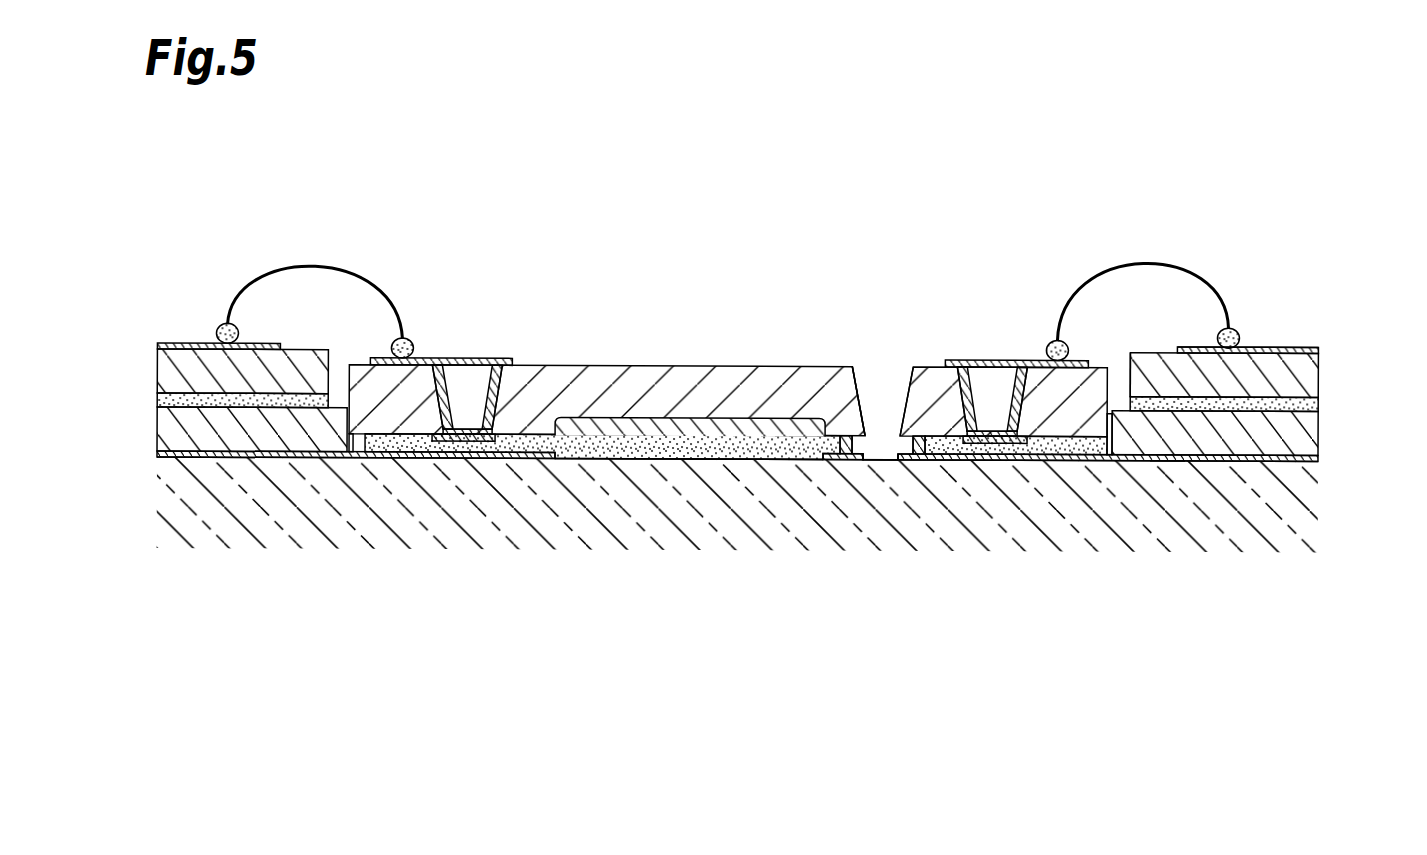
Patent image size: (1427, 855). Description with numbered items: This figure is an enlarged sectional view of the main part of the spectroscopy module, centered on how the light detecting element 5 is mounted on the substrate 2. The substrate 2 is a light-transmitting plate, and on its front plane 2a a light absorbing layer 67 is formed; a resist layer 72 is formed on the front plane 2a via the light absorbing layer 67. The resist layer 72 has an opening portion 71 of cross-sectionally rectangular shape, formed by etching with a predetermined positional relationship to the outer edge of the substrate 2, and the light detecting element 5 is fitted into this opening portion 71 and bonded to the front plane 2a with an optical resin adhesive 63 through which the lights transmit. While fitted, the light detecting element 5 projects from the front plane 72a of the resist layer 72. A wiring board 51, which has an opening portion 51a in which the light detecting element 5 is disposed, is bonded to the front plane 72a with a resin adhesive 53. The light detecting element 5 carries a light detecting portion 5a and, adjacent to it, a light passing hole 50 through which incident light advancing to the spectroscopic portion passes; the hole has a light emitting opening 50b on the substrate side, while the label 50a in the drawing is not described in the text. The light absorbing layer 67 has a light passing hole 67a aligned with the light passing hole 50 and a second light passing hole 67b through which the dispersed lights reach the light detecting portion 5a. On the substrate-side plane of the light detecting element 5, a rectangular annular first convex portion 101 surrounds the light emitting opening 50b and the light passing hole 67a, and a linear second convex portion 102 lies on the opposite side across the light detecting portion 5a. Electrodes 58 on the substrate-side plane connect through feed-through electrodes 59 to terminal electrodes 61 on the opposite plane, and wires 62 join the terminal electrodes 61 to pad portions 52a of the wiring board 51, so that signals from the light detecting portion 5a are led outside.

The substrate 2 is at (1311, 515).
The front plane 2a is at (1170, 456).
The light detecting element 5 is at (577, 364).
The light detecting portion 5a is at (697, 416).
The light passing hole 50 is at (900, 400).
The groove opening 50a is at (862, 364).
The light emitting opening 50b is at (873, 452).
The wiring board 51 is at (1307, 368).
The opening portion 51a is at (1127, 368).
The pad portions 52a is at (1298, 343).
The resin adhesive 53 is at (1310, 396).
The electrodes 58 is at (466, 441).
The feed-through electrodes 59 is at (450, 404).
The terminal electrodes 61 is at (418, 357).
The wires 62 is at (1163, 260).
The optical resin adhesive 63 is at (714, 458).
The light absorbing layer 67 is at (1312, 456).
The light passing hole 67a is at (889, 458).
The light passing hole 67b is at (557, 458).
The opening portion 71 is at (1108, 423).
The resist layer 72 is at (1310, 426).
The front plane 72a is at (1199, 396).
The first convex portion 101 is at (845, 440).
The second convex portion 102 is at (360, 447).